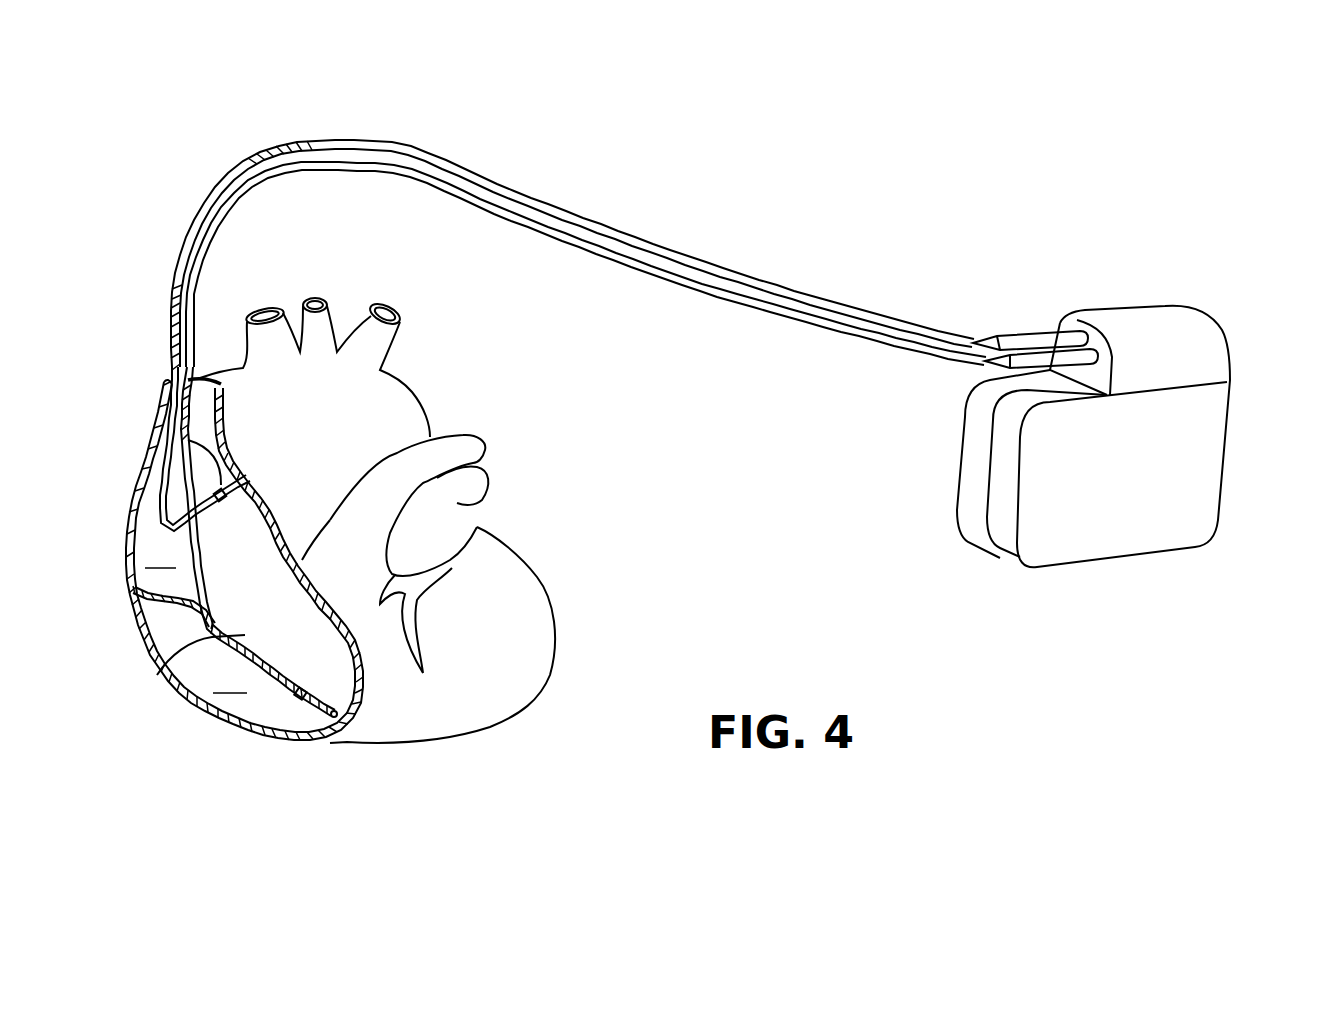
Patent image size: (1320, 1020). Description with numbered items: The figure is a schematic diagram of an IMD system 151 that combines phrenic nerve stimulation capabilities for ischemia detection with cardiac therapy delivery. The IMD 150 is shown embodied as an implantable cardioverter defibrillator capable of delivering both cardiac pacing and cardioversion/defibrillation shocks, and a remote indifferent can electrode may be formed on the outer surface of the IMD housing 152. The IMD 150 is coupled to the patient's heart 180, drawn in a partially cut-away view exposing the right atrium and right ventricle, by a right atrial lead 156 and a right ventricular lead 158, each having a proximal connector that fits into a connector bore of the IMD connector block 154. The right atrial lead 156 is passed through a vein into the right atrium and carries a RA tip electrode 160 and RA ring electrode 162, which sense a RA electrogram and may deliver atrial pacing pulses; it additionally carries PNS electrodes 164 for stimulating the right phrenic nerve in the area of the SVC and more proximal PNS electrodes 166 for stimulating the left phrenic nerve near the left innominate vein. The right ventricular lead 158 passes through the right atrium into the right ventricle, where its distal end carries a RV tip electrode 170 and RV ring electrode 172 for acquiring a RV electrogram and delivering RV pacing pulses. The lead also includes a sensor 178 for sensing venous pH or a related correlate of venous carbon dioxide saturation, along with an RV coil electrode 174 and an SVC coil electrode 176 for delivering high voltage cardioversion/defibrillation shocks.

The IMD 150 is at (1117, 437).
The IMD system 151 is at (841, 134).
The IMD housing 152 is at (1058, 553).
The IMD connector block 154 is at (1147, 325).
The right atrial lead 156 is at (605, 259).
The right ventricular lead 158 is at (772, 306).
The RA tip electrode 160 is at (246, 476).
The RA ring electrode 162 is at (193, 449).
The PNS electrodes 164 is at (543, 259).
The PNS electrodes 166 is at (285, 158).
The RV tip electrode 170 is at (333, 712).
The RV ring electrode 172 is at (262, 582).
The RV coil electrode 174 is at (168, 674).
The SVC coil electrode 176 is at (177, 398).
The sensor 178 is at (293, 683).
The heart 180 is at (548, 576).